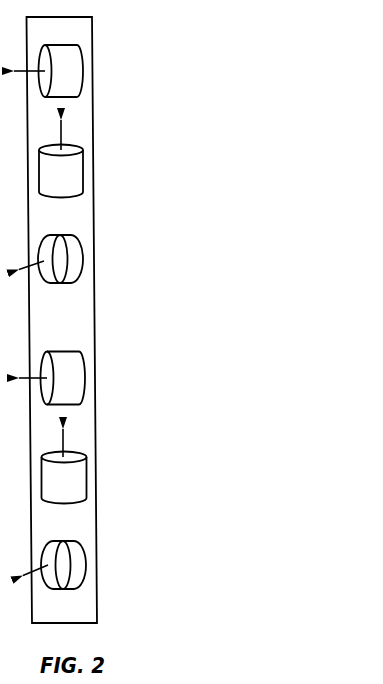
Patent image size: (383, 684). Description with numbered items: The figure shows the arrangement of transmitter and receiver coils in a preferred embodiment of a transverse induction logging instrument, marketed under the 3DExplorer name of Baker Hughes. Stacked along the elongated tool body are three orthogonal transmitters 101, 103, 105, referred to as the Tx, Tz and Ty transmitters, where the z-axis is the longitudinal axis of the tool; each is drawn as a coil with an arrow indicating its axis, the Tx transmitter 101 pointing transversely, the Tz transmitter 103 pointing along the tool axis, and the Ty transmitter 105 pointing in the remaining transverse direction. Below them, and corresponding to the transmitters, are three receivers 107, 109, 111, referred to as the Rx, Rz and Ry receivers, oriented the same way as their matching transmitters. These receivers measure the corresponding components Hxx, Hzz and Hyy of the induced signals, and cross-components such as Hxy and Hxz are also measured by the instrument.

The transmitter 101 is at (157, 72).
The transmitter 103 is at (157, 167).
The transmitter 105 is at (157, 258).
The receiver 107 is at (157, 380).
The receiver 109 is at (158, 474).
The receiver 111 is at (160, 566).